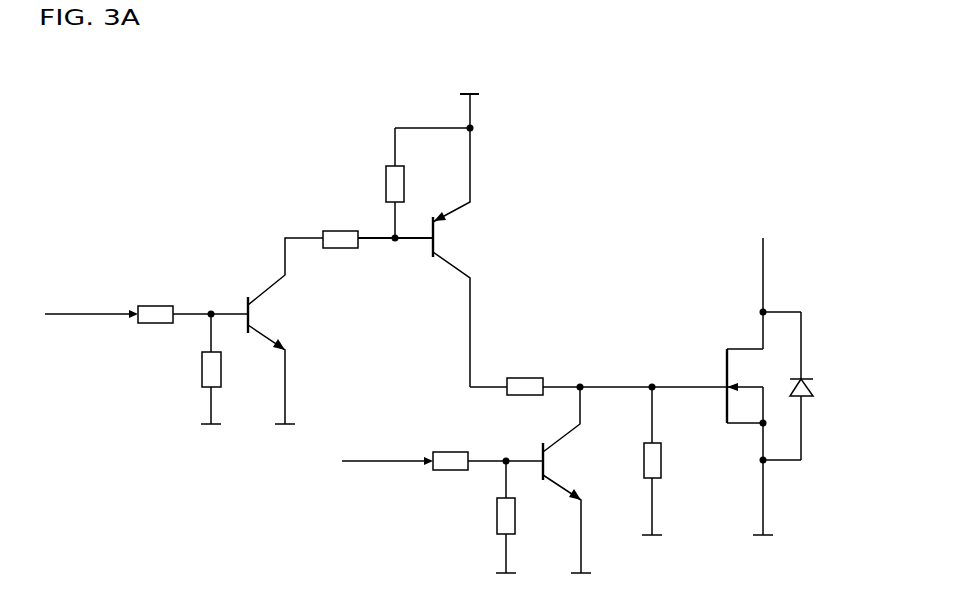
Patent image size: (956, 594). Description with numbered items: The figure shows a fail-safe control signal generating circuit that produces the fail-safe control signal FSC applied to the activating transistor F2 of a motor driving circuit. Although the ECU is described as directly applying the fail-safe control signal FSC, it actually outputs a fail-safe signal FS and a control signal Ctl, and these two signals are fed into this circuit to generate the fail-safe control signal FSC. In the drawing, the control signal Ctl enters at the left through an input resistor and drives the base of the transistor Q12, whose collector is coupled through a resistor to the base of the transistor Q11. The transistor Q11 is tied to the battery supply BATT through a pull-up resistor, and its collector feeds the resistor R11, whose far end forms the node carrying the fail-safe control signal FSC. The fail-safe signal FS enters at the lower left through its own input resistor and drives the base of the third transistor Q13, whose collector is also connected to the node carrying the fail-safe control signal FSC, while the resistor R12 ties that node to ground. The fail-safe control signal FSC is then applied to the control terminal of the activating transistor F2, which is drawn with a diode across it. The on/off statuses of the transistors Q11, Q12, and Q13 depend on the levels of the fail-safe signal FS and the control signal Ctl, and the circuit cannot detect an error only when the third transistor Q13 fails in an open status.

The control signal Ctl is at (146, 352).
The transistor Q12 is at (285, 331).
The battery voltage terminal BATT is at (407, 155).
The transistor Q11 is at (466, 257).
The resistor R11 is at (561, 370).
The fail-safe control signal FSC is at (711, 386).
The activating transistor F2 is at (803, 386).
The resistor R12 is at (676, 461).
The third transistor Q13 is at (578, 480).
The fail-safe signal FS is at (442, 500).